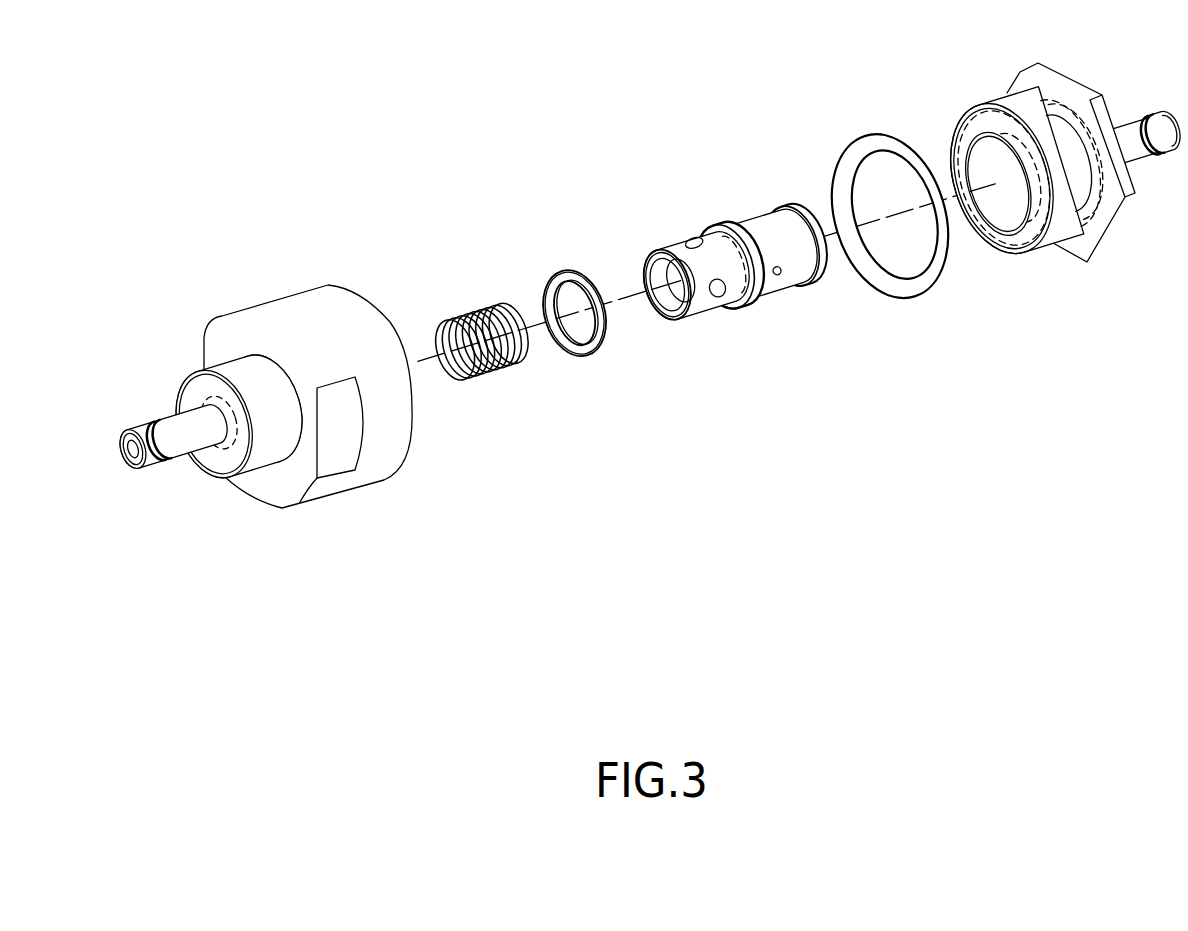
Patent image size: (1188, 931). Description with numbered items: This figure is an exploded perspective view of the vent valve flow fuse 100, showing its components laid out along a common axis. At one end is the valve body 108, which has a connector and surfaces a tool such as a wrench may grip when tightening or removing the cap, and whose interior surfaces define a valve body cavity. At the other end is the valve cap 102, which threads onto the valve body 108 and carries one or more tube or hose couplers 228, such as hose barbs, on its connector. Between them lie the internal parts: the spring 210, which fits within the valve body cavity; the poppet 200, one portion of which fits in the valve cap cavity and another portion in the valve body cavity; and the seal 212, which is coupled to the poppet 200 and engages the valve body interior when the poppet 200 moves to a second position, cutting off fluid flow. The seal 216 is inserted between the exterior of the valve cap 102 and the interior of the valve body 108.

The vent valve flow fuse 100 is at (253, 116).
The valve cap 102 is at (1060, 80).
The valve body 108 is at (293, 310).
The poppet 200 is at (724, 226).
The spring 210 is at (472, 312).
The seal 212 is at (563, 278).
The seal 216 is at (873, 143).
The tube or hose couplers 228 is at (434, 449).